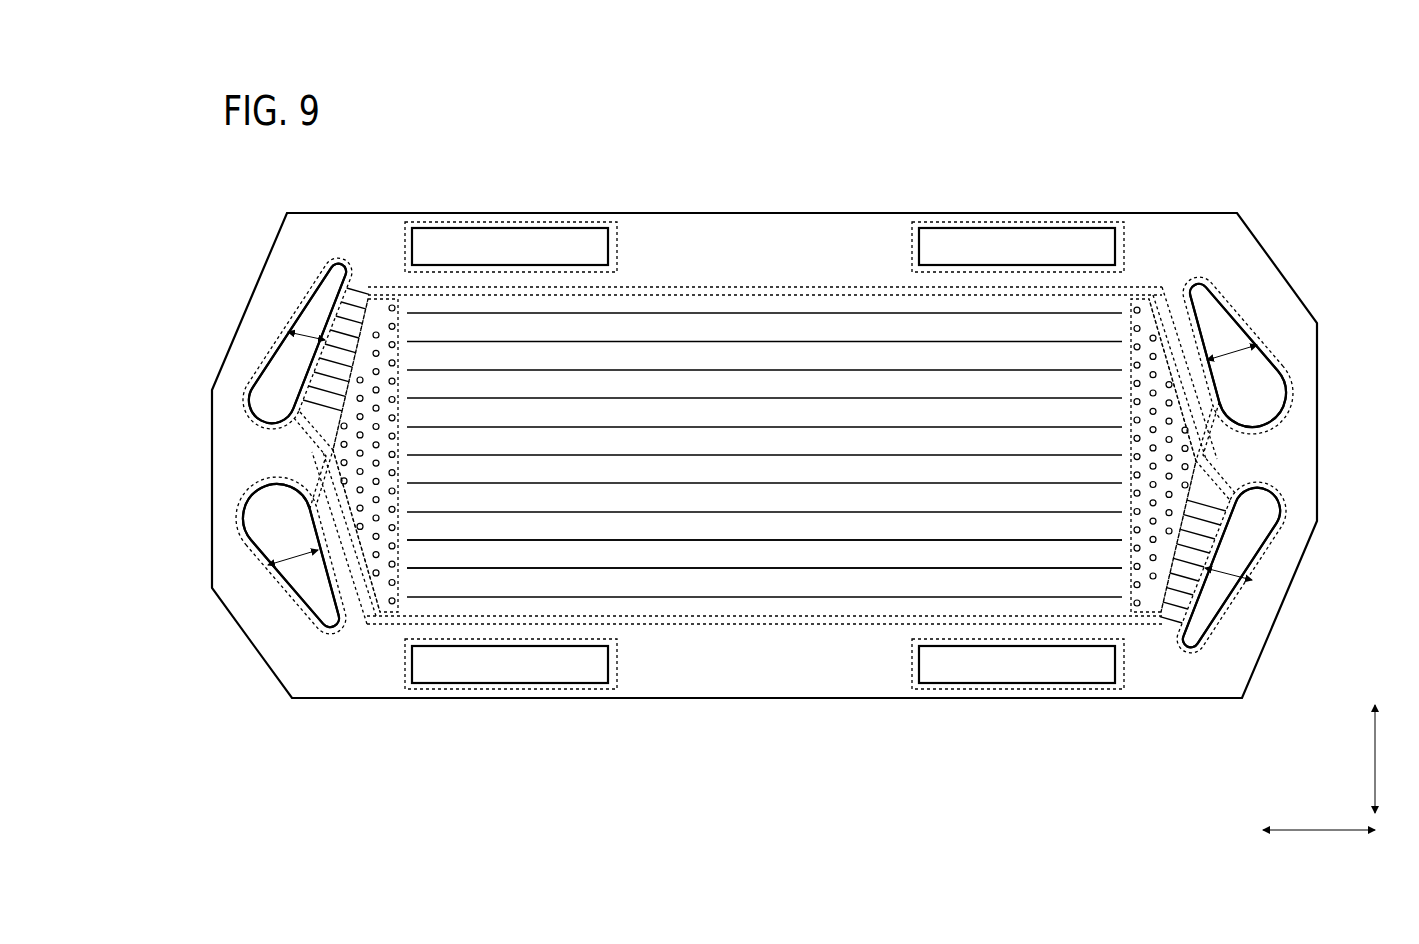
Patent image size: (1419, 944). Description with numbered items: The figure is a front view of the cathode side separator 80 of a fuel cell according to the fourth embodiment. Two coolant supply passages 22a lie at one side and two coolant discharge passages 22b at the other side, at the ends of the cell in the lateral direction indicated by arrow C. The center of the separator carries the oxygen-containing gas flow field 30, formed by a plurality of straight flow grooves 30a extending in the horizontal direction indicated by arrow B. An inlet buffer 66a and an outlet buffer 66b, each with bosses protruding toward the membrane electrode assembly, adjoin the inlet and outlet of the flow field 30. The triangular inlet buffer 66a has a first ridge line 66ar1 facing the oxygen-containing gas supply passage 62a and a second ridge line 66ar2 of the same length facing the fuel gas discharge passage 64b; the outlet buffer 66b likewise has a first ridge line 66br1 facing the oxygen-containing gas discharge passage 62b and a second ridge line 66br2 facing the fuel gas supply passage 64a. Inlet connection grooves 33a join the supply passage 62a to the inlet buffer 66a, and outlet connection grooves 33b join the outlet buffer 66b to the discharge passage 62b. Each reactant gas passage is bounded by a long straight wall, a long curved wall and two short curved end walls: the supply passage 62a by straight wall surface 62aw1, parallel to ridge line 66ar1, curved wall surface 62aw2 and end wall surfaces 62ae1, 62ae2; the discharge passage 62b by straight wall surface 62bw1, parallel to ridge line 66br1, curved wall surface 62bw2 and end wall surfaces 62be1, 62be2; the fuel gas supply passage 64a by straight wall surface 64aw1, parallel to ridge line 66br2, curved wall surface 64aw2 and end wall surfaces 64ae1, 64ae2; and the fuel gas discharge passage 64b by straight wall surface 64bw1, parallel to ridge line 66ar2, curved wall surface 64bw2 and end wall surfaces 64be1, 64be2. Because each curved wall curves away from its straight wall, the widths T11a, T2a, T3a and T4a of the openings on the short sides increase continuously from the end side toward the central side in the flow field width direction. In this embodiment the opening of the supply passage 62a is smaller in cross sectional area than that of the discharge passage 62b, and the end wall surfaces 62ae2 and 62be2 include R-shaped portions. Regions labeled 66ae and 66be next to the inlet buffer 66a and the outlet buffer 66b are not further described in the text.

The cathode side separator 80 is at (432, 148).
The coolant supply passage 22a is at (503, 245).
The coolant discharge passage 22b is at (962, 245).
The oxygen-containing gas flow field 30 is at (685, 557).
The flow grooves 30a is at (863, 528).
The oxygen-containing gas supply passage 62a is at (300, 330).
The oxygen-containing gas discharge passage 62b is at (1232, 590).
The fuel gas supply passage 64a is at (1225, 306).
The fuel gas discharge passage 64b is at (300, 603).
The straight wall surface 62aw1 is at (310, 322).
The curved wall surface 62aw2 is at (270, 356).
The end wall surface 62ae1 is at (252, 404).
The end wall surface 62ae2 is at (335, 262).
The straight wall surface 62bw1 is at (1235, 598).
The curved wall surface 62bw2 is at (1262, 580).
The end wall surface 62be1 is at (1290, 510).
The end wall surface 62be2 is at (1198, 652).
The straight wall surface 64aw1 is at (1195, 307).
The curved wall surface 64aw2 is at (1283, 392).
The end wall surface 64ae1 is at (1288, 407).
The end wall surface 64ae2 is at (1203, 283).
The straight wall surface 64bw1 is at (288, 630).
The curved wall surface 64bw2 is at (240, 520).
The end wall surface 64be1 is at (243, 503).
The end wall surface 64be2 is at (316, 634).
The inlet buffer 66a is at (382, 614).
The outlet buffer 66b is at (1140, 340).
The first ridge line 66ar1 is at (372, 300).
The second ridge line 66ar2 is at (360, 578).
The first ridge line 66br1 is at (1158, 614).
The second ridge line 66br2 is at (1150, 328).
The inlet buffer edge seal line 66ae is at (305, 452).
The outlet buffer edge seal line 66be is at (1235, 452).
The inlet connection grooves 33a is at (325, 398).
The outlet connection grooves 33b is at (1212, 560).
The width of the opening on the short side T11a is at (283, 334).
The width of the opening on the short side T2a is at (1228, 564).
The width of the opening on the short side T3a is at (1234, 360).
The width of the opening on the short side T4a is at (293, 549).
The arrow B is at (1319, 844).
The arrow C is at (1388, 759).